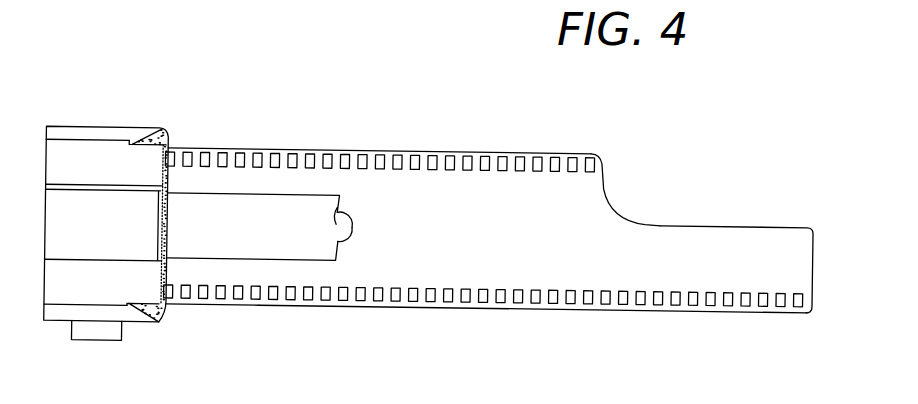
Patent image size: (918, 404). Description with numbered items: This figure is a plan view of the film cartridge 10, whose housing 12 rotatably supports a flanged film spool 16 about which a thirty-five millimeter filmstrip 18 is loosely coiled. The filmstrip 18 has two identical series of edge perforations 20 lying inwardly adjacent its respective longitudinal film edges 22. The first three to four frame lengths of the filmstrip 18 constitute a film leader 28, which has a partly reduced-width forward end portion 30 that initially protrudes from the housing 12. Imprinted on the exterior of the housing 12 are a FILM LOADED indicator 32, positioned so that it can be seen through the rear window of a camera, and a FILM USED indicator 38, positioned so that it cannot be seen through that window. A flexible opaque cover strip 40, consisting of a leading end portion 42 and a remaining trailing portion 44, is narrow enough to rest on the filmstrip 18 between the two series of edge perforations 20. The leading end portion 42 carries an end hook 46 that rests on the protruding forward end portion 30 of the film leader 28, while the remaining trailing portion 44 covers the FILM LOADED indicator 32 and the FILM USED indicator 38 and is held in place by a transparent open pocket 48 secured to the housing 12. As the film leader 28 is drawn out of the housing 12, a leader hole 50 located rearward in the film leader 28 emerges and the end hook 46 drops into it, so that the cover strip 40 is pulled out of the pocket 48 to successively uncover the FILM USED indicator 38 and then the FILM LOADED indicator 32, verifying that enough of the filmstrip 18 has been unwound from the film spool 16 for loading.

The film cartridge 10 is at (115, 115).
The housing 12 is at (76, 140).
The flanged film spool 16 is at (118, 333).
The filmstrip 18 is at (228, 322).
The edge perforations 20 is at (333, 150).
The longitudinal film edges 22 is at (387, 148).
The film leader 28 is at (548, 190).
The forward end portion 30 is at (658, 266).
The FILM LOADED indicator 32 is at (145, 224).
The FILM USED indicator 38 is at (72, 208).
The cover strip 40 is at (232, 178).
The leading end portion 42 is at (336, 220).
The remaining trailing portion 44 is at (277, 257).
The end hook 46 is at (355, 226).
The transparent open pocket 48 is at (96, 262).
The leader hole 50 is at (352, 240).